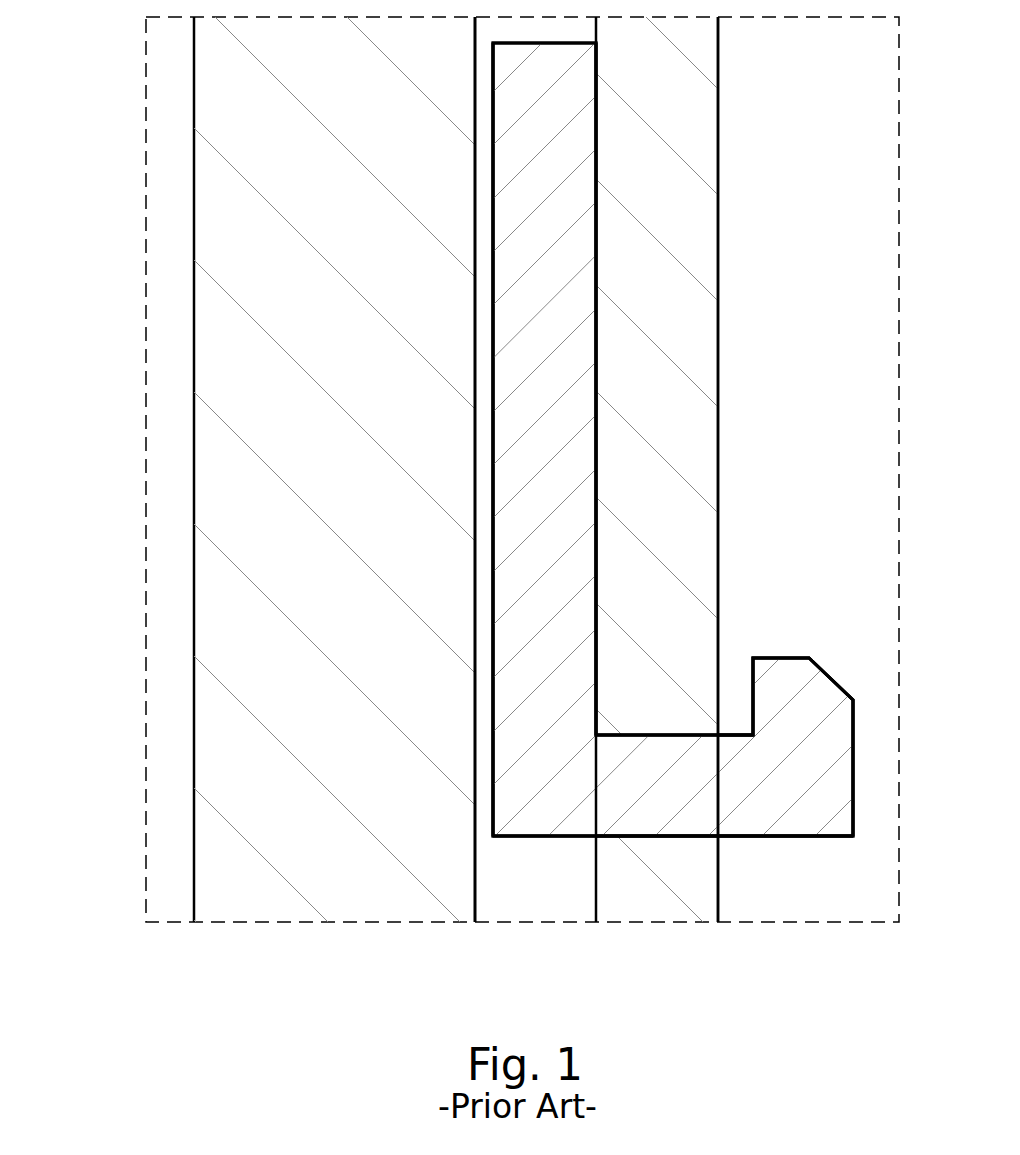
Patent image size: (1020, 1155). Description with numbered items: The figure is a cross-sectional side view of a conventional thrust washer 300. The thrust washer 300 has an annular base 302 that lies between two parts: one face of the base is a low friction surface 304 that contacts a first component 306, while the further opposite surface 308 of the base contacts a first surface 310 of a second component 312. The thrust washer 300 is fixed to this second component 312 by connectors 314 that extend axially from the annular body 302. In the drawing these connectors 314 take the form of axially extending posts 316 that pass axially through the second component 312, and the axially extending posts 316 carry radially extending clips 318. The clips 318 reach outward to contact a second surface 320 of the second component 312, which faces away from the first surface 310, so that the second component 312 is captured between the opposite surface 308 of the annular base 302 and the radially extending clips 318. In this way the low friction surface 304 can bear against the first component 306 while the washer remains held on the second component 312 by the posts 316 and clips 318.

The thrust washer 300 is at (532, 852).
The annular base 302 is at (560, 429).
The low friction surface 304 is at (492, 480).
The first component 306 is at (288, 283).
The opposite surface 308 is at (596, 336).
The first surface 310 is at (596, 239).
The second component 312 is at (692, 162).
The connectors 314 is at (744, 858).
The axially extending posts 316 is at (665, 791).
The radially extending clips 318 is at (779, 690).
The second surface 320 is at (718, 538).